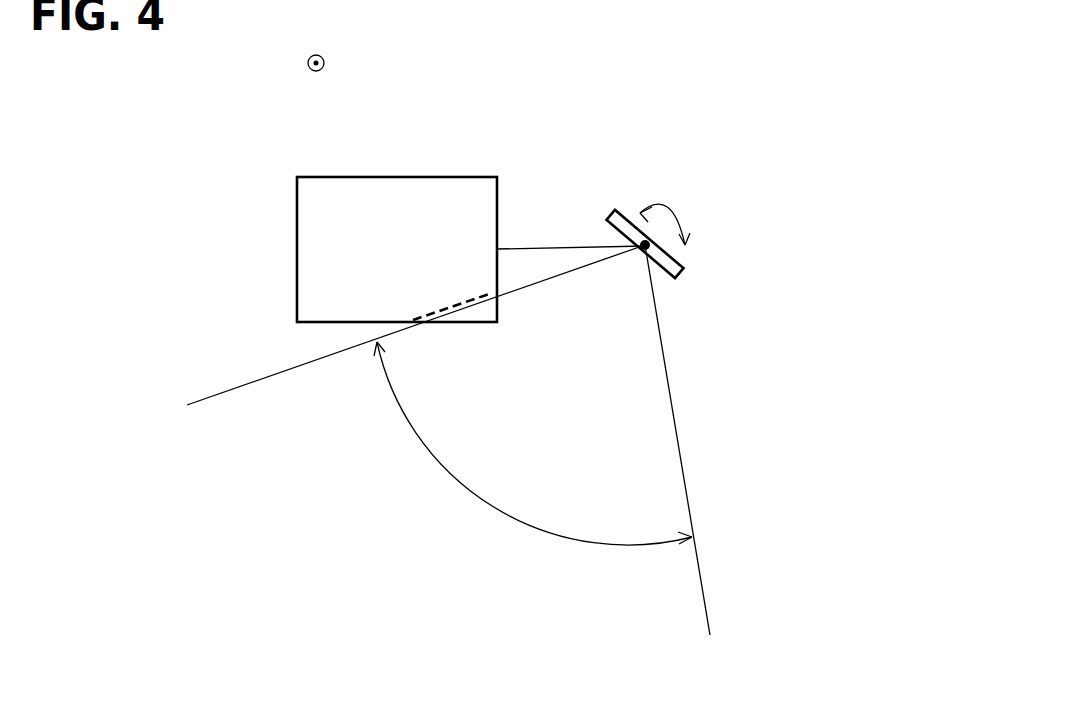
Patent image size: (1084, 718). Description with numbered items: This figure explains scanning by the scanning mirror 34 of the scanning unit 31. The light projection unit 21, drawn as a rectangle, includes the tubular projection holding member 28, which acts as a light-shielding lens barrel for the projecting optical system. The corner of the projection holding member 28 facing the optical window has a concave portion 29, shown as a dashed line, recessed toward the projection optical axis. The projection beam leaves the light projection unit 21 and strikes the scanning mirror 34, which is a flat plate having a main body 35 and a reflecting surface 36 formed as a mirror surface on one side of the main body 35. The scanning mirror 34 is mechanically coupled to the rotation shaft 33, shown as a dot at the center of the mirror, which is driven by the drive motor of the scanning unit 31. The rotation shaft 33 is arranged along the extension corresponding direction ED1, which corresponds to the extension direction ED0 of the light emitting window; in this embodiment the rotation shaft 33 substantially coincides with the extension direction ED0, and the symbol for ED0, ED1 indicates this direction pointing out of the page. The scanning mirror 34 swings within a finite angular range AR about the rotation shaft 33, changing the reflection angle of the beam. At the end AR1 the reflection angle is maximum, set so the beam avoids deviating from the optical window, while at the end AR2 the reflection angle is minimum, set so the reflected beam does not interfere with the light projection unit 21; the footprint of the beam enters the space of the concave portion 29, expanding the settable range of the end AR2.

The light projection unit 21 is at (397, 226).
The projection holding member 28 is at (361, 177).
The concave portion 29 is at (468, 300).
The scanning unit 31 is at (702, 248).
The scanning mirror 34 is at (702, 248).
The rotation shaft 33 is at (643, 241).
The main body 35 is at (685, 258).
The reflecting surface 36 is at (665, 280).
The extension direction ED0 is at (375, 64).
The extension corresponding direction ED1 is at (325, 63).
The finite angular range AR is at (445, 573).
The end AR1 is at (705, 603).
The end AR2 is at (236, 388).